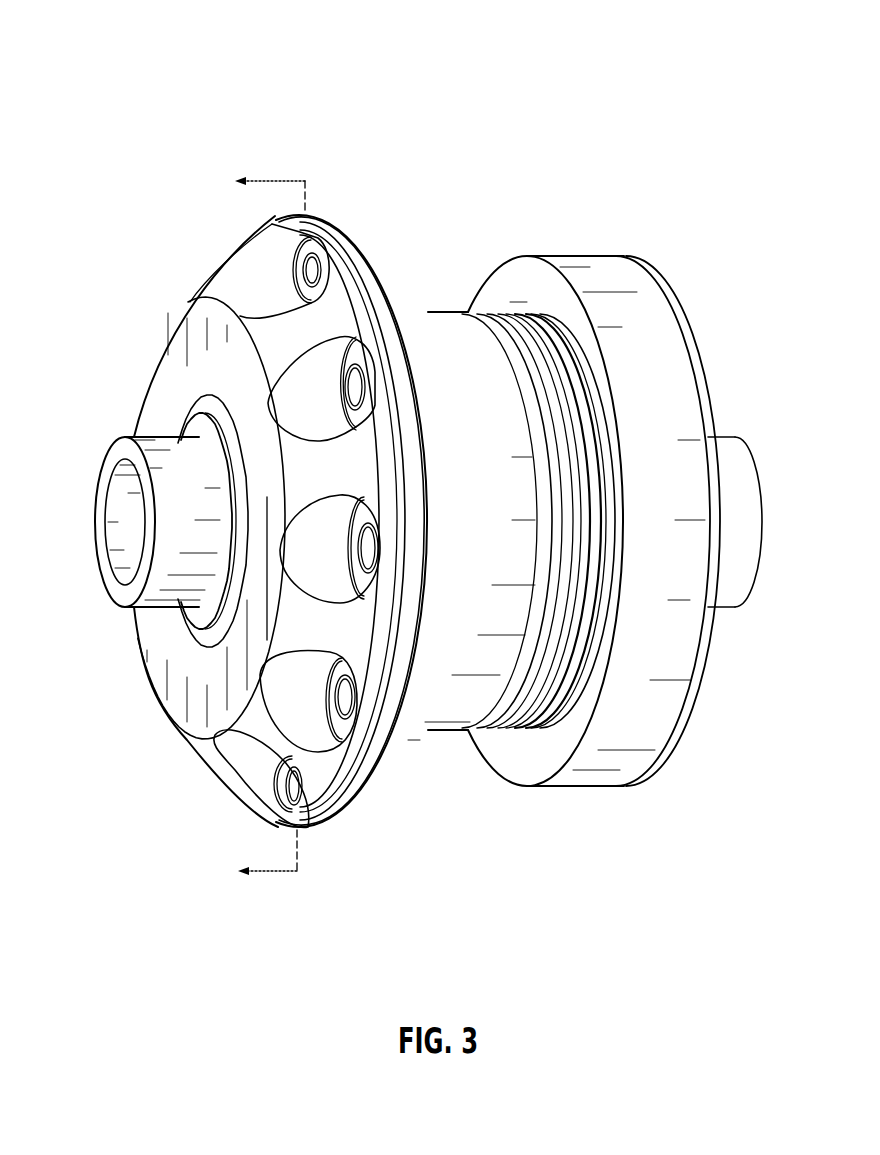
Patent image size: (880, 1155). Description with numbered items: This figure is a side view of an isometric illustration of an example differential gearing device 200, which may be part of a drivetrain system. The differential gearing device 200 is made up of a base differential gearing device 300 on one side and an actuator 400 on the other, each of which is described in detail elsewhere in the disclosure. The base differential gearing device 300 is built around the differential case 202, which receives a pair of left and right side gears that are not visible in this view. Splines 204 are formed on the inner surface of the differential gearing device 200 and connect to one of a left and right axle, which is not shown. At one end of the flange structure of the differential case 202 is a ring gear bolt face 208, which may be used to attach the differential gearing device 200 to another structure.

The differential gearing device 200 is at (126, 53).
The differential case 202 is at (318, 802).
The splines 204 is at (117, 586).
The ring gear bolt face 208 is at (329, 211).
The base differential gearing device 300 is at (156, 548).
The actuator 400 is at (625, 600).